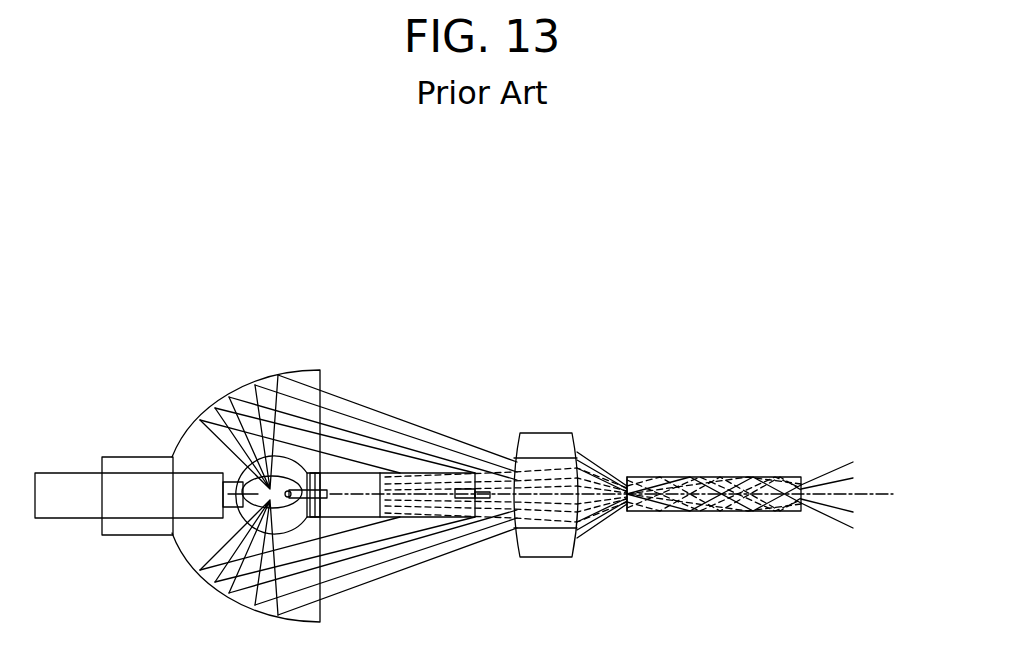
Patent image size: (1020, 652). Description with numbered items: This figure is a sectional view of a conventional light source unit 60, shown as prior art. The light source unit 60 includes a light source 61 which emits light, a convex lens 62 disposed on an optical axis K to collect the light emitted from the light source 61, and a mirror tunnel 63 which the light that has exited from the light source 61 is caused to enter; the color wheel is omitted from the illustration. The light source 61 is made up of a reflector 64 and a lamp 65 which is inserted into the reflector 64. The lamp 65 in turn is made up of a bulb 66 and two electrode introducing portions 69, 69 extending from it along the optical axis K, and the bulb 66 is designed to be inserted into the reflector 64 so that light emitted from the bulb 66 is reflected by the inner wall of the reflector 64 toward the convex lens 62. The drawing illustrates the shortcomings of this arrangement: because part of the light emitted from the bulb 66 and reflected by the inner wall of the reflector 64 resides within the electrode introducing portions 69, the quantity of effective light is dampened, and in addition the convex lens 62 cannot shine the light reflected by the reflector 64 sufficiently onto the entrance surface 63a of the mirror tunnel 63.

The light source unit 60 is at (553, 234).
The light source 61 is at (261, 334).
The convex lens 62 is at (546, 432).
The mirror tunnel 63 is at (746, 476).
The entrance surface 63a is at (621, 474).
The reflector 64 is at (305, 368).
The lamp 65 is at (210, 363).
The bulb 66 is at (308, 532).
The electrode introducing portions 69 is at (63, 472).
The optical axis K is at (356, 494).